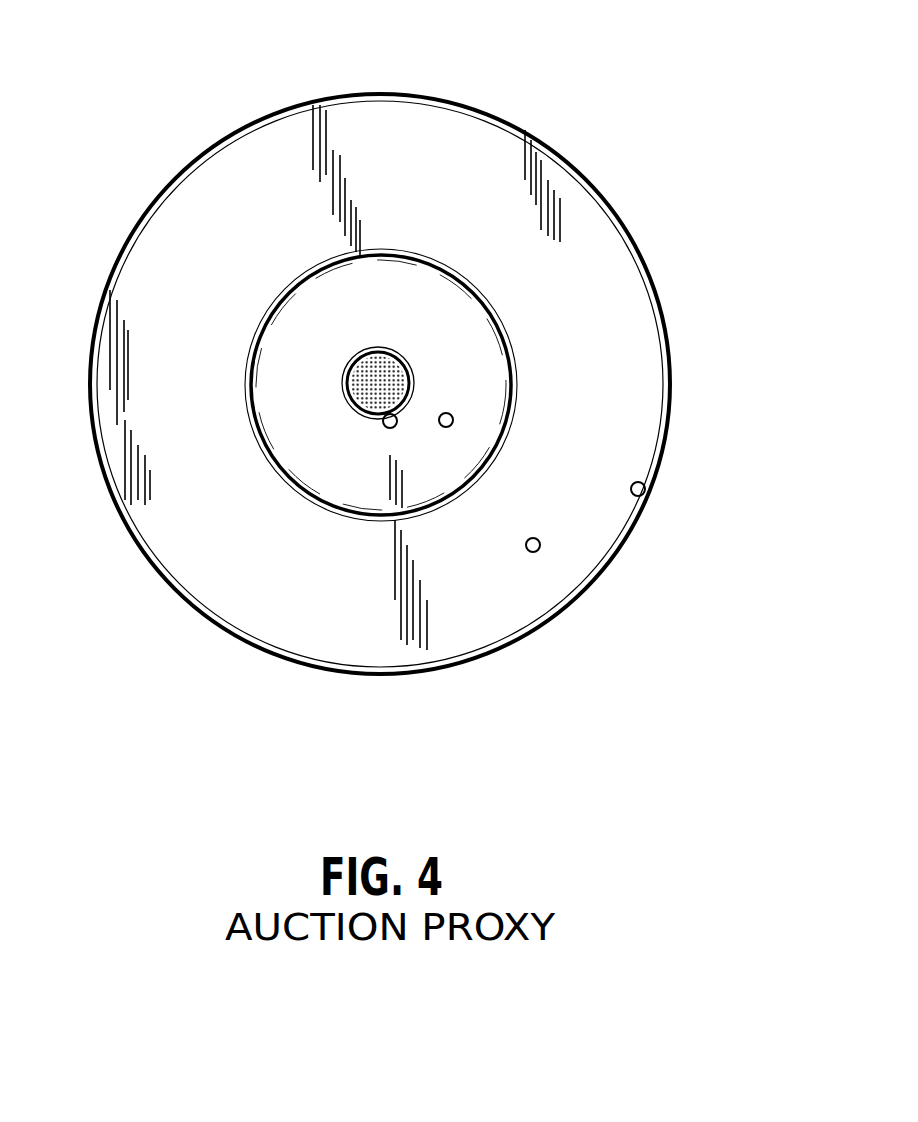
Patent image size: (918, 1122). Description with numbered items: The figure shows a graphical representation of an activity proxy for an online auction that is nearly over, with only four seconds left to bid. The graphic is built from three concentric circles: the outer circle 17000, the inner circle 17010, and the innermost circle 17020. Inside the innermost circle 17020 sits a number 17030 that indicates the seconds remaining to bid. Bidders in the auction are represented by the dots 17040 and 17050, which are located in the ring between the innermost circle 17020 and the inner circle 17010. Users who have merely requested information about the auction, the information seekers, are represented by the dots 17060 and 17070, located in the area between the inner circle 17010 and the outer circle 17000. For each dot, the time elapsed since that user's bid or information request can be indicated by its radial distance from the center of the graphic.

The outer circle 17000 is at (578, 172).
The inner circle 17010 is at (500, 325).
The innermost circle 17020 is at (412, 381).
The number 17030 is at (412, 393).
The dot 17040 is at (385, 427).
The dot 17050 is at (446, 427).
The dot 17060 is at (538, 551).
The dot 17070 is at (643, 496).